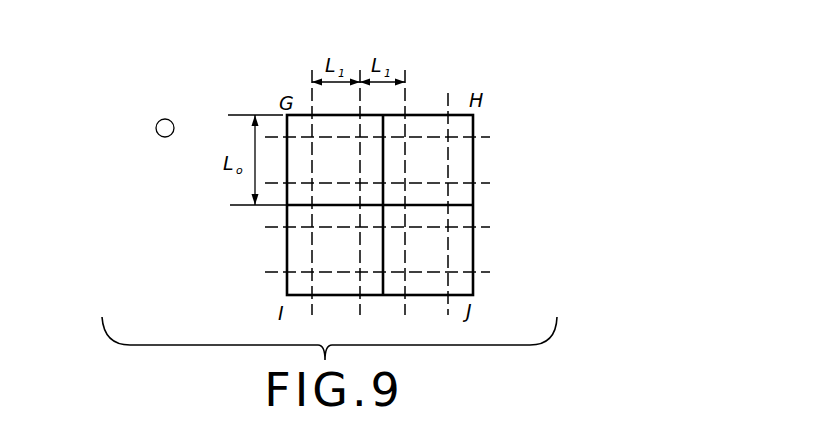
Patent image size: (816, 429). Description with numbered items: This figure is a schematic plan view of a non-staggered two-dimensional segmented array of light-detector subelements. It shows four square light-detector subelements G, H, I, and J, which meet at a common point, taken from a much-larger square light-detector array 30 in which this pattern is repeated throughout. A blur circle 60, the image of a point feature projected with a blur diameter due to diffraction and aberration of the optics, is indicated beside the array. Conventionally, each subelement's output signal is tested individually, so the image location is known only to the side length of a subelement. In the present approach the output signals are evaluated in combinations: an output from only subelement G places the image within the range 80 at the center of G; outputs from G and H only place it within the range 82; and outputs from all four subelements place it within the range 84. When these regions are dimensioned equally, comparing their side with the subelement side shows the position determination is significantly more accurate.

The light-detector array 30 is at (265, 84).
The blur circle 60 is at (159, 136).
The range 80 is at (352, 170).
The range 82 is at (390, 158).
The range 84 is at (395, 193).